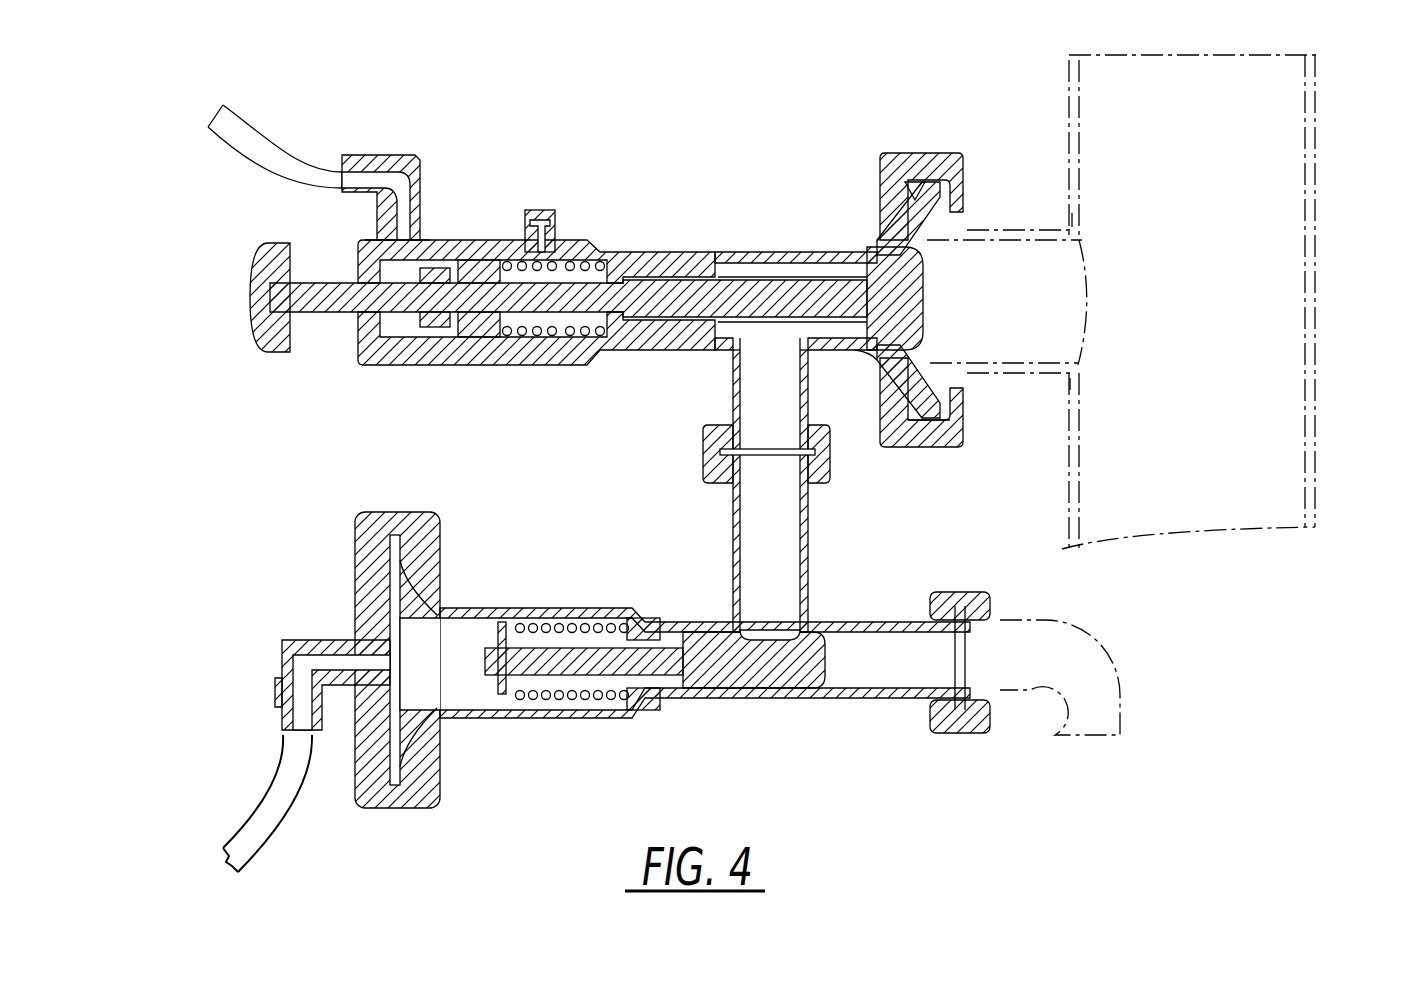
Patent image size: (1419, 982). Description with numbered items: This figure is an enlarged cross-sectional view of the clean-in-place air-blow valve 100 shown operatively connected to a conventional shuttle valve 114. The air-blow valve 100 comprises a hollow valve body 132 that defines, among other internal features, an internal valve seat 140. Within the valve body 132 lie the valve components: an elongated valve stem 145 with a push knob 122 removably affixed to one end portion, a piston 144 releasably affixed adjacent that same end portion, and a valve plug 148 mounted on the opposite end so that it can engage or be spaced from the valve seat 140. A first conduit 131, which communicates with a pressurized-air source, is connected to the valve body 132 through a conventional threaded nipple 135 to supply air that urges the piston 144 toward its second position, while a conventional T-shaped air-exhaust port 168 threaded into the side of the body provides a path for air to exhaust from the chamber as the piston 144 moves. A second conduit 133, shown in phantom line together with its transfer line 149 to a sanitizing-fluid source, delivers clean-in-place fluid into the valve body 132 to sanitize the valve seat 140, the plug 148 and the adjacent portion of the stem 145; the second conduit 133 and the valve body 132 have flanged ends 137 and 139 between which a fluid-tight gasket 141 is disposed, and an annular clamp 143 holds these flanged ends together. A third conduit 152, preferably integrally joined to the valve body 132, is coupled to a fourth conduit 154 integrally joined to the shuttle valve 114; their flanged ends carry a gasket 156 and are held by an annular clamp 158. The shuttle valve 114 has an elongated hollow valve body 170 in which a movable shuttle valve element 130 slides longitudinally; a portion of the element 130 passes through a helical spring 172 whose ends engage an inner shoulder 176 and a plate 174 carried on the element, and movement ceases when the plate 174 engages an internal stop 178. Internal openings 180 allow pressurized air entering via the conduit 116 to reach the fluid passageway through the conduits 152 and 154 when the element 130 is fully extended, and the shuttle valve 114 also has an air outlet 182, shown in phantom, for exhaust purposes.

The clean-in-place air-blow valve 100 is at (660, 125).
The shuttle valve 114 is at (852, 737).
The conduit 116 is at (273, 780).
The push knob 122 is at (252, 260).
The shuttle valve element 130 is at (780, 690).
The first conduit 131 is at (270, 172).
The hollow valve body 132 is at (713, 206).
The second conduit 133 is at (1015, 230).
The threaded nipple 135 is at (413, 162).
The flanged end 137 is at (963, 178).
The flanged end 139 is at (903, 200).
The internal valve seat 140 is at (872, 270).
The gasket 141 is at (927, 393).
The annular clamp 143 is at (935, 450).
The piston 144 is at (493, 328).
The elongated valve stem 145 is at (772, 283).
The valve plug 148 is at (925, 287).
The transfer line 149 is at (1318, 165).
The third conduit 152 is at (733, 396).
The fourth conduit 154 is at (810, 565).
The gasket 156 is at (716, 484).
The annular clamp 158 is at (705, 452).
The T-shaped air-exhaust port 168 is at (538, 208).
The elongated hollow valve body 170 is at (905, 700).
The helical spring 172 is at (547, 625).
The plate 174 is at (492, 627).
The inner shoulder 176 is at (612, 718).
The internal stop 178 is at (530, 700).
The internal openings 180 is at (583, 713).
The air outlet 182 is at (1120, 688).